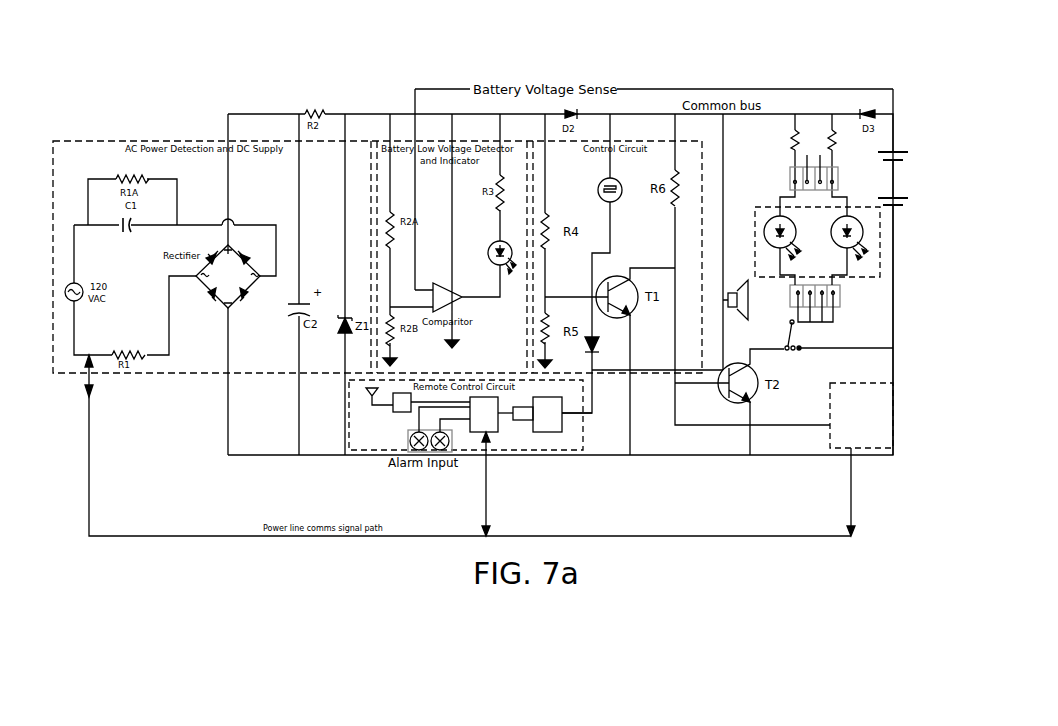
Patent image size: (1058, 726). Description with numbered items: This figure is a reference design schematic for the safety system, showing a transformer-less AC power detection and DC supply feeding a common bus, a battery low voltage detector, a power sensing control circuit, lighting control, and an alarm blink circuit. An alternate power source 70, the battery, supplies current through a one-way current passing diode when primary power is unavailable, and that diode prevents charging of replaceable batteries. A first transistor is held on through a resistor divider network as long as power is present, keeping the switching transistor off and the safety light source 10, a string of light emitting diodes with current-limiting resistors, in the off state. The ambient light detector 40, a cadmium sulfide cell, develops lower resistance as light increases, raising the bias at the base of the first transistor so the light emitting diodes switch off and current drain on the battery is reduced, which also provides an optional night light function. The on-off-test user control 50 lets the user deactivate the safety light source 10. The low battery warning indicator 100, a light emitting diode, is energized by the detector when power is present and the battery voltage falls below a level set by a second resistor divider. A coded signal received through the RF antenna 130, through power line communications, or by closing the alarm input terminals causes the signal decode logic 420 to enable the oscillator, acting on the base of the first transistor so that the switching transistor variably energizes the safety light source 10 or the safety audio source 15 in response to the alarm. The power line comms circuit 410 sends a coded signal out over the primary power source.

The safety light source 10 is at (837, 225).
The safety audio source 15 is at (746, 242).
The ambient light detector 40 is at (626, 176).
The on-off-test user control 50 is at (810, 358).
The alternate power source 70 is at (903, 165).
The low battery warning indicator 100 is at (513, 240).
The RF antenna 130 is at (384, 407).
The power line comms circuit 410 is at (861, 415).
The signal decode logic 420 is at (500, 424).